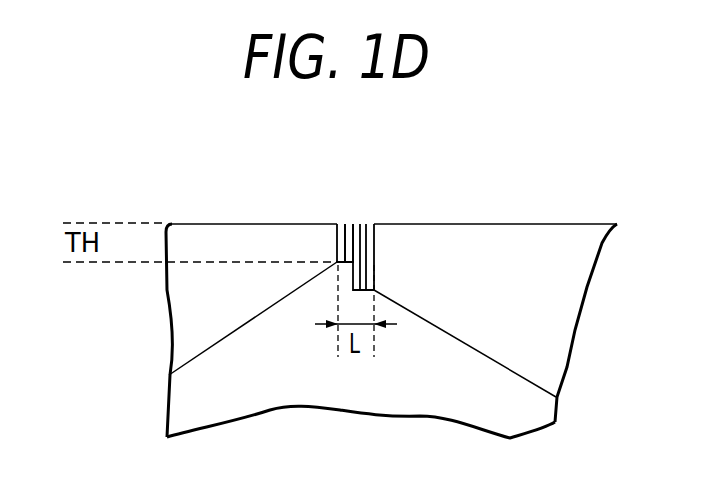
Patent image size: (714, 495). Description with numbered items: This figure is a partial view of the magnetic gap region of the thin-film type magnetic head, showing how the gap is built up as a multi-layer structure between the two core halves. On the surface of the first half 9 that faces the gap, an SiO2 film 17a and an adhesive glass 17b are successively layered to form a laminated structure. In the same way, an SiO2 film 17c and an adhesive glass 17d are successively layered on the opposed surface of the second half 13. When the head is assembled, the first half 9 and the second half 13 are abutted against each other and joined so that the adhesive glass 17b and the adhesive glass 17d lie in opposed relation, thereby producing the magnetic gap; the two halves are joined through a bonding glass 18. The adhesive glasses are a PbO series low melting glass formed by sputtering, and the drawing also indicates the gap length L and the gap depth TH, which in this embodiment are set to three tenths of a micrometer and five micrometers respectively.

The first half 9 is at (222, 235).
The second half 13 is at (485, 242).
The SiO2 film 17a is at (343, 240).
The adhesive glass 17b is at (353, 224).
The SiO2 film 17c is at (374, 224).
The adhesive glass 17d is at (363, 224).
The bonding glass 18 is at (365, 393).